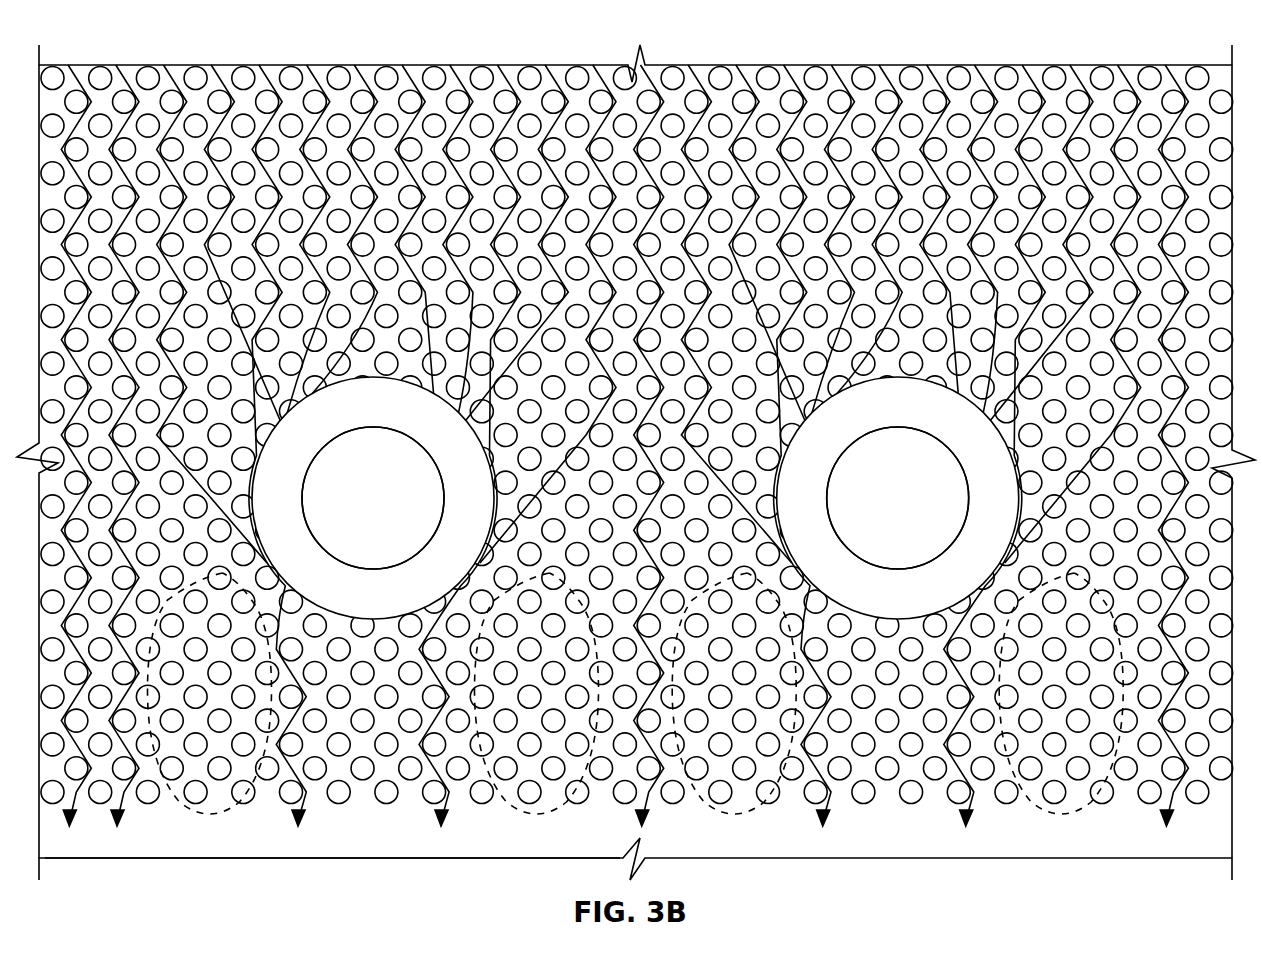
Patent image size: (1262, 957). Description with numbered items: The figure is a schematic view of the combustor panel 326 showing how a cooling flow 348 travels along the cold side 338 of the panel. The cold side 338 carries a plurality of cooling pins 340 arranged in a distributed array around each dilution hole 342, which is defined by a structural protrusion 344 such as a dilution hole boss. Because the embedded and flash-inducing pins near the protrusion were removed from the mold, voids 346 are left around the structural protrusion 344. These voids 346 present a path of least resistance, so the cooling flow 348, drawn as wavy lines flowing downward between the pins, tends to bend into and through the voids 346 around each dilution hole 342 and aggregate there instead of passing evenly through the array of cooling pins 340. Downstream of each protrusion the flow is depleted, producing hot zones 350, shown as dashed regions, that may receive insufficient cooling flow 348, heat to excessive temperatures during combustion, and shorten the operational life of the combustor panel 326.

The combustor panel 326 is at (1010, 40).
The cold side 338 is at (462, 70).
The cooling pins 340 is at (600, 770).
The dilution hole 342 is at (352, 510).
The structural protrusion 344 is at (432, 561).
The voids 346 is at (423, 395).
The cooling flow 348 is at (124, 818).
The hot zones 350 is at (188, 706).